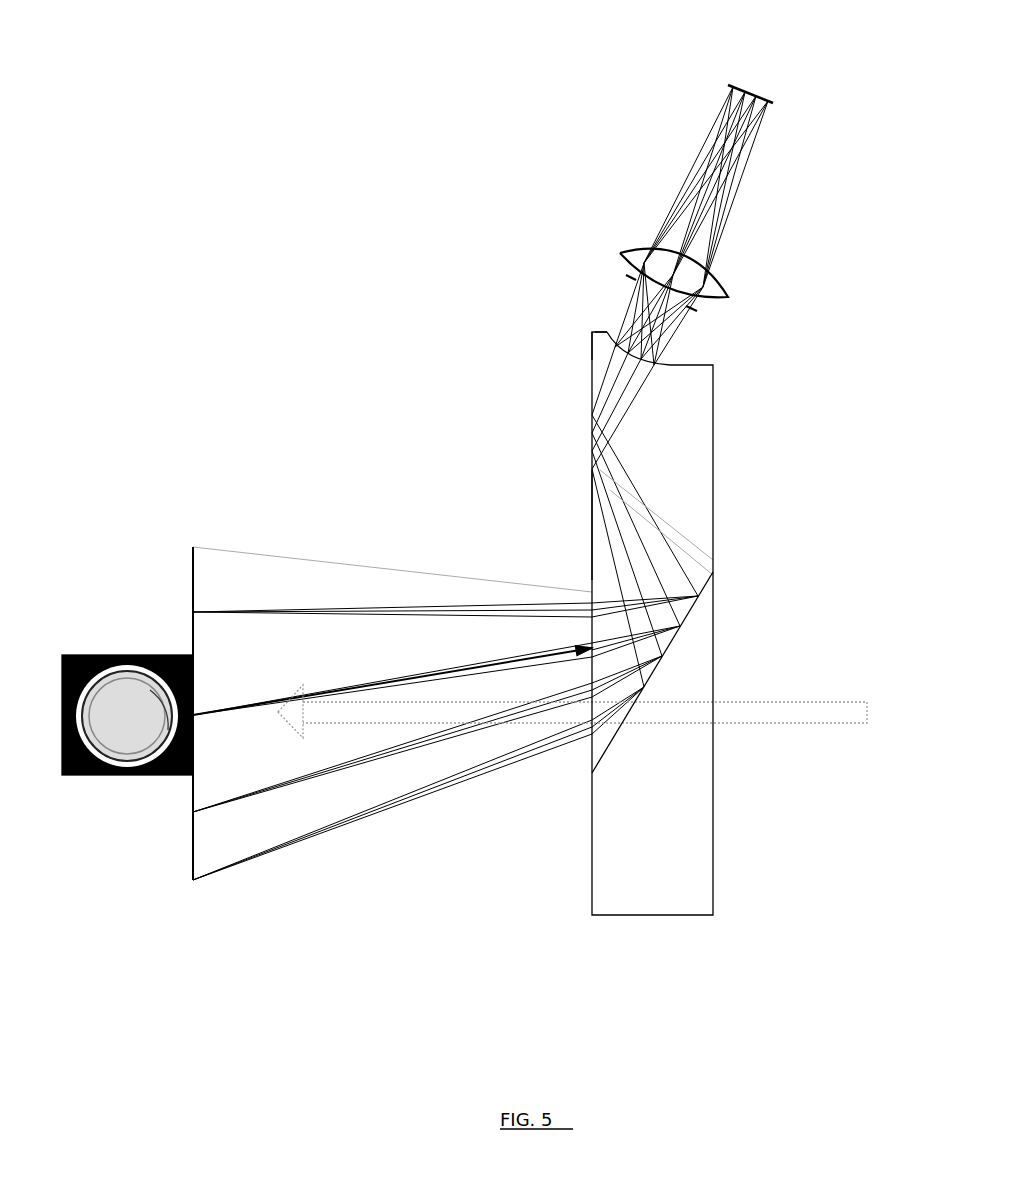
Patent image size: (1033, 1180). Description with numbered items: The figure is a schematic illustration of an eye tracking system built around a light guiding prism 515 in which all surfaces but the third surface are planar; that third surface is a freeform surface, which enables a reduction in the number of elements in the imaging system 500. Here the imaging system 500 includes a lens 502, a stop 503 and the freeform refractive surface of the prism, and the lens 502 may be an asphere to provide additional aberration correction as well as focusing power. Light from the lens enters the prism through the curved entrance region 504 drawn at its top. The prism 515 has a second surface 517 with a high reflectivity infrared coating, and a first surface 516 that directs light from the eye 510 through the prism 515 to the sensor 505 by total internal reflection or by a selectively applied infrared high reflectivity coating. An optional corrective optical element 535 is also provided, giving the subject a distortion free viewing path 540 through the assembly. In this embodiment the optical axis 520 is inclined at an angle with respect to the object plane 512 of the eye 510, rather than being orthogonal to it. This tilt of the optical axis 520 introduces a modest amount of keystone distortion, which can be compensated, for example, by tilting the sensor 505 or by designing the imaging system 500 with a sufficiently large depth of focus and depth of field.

The imaging system 500 is at (592, 238).
The lens 502 is at (730, 290).
The stop 503 is at (707, 315).
The curved input surface 504 is at (670, 366).
The sensor 505 is at (728, 85).
The eye 510 is at (175, 718).
The object plane 512 is at (193, 883).
The light guiding prism 515 is at (602, 353).
The first surface 516 is at (592, 525).
The second surface 517 is at (662, 657).
The optical axis 520 is at (397, 677).
The corrective optical element 535 is at (672, 863).
The viewing path 540 is at (851, 723).